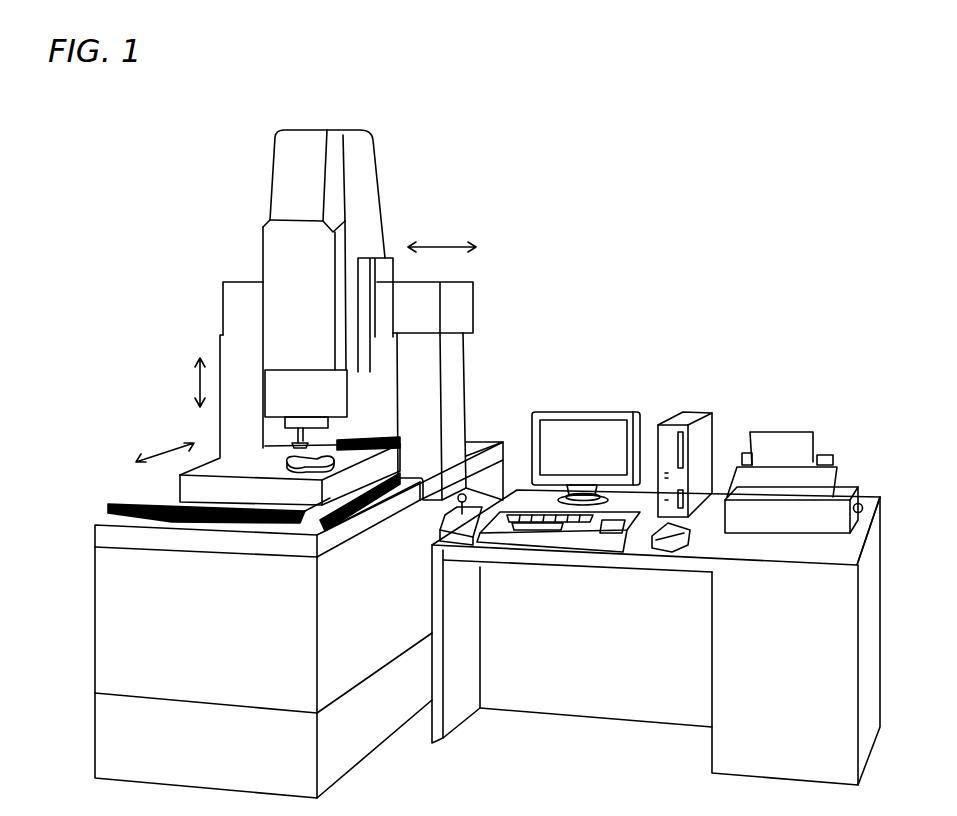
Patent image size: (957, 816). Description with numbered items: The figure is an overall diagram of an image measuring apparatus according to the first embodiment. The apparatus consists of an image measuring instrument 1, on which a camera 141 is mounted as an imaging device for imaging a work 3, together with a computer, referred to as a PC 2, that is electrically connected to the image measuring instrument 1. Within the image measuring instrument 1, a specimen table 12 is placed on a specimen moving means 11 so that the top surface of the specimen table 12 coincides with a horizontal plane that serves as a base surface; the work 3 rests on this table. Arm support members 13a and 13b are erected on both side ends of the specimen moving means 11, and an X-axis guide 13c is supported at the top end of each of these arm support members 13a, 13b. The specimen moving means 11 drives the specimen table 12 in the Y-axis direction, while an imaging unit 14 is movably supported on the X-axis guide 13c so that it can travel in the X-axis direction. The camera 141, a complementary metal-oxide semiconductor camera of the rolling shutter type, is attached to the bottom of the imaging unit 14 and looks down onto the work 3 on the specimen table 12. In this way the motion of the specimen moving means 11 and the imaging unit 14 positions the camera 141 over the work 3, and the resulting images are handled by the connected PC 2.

The image measuring instrument 1 is at (403, 157).
The computer (PC) 2 is at (656, 383).
The work 3 is at (328, 468).
The specimen moving means 11 is at (182, 500).
The specimen table 12 is at (262, 463).
The arm support member 13a is at (454, 378).
The arm support member 13b is at (219, 350).
The X-axis guide 13c is at (231, 282).
The imaging unit 14 is at (273, 167).
The camera 141 is at (349, 426).